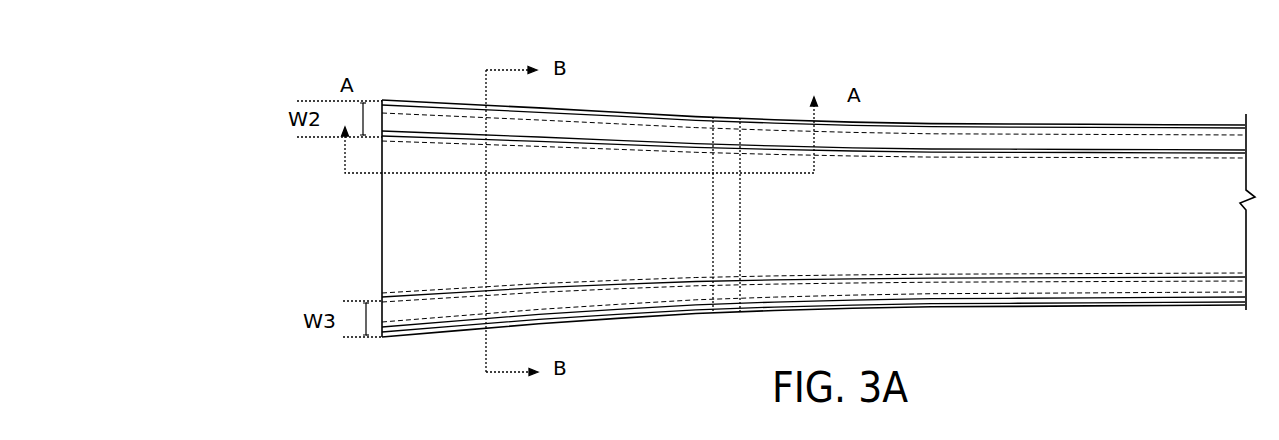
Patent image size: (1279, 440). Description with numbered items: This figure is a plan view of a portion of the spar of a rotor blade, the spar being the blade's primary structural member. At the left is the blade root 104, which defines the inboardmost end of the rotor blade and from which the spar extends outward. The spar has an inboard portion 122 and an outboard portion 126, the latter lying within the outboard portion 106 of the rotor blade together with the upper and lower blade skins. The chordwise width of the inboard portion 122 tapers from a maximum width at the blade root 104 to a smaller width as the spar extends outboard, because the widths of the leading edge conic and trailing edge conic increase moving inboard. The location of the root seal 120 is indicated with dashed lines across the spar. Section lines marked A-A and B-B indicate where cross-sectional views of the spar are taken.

The blade root 104 is at (382, 100).
The outboard portion of the rotor blade 106 is at (1080, 100).
The root seal 120 is at (723, 118).
The inboard portion of the spar 122 is at (601, 43).
The outboard portion of the spar 126 is at (1070, 57).